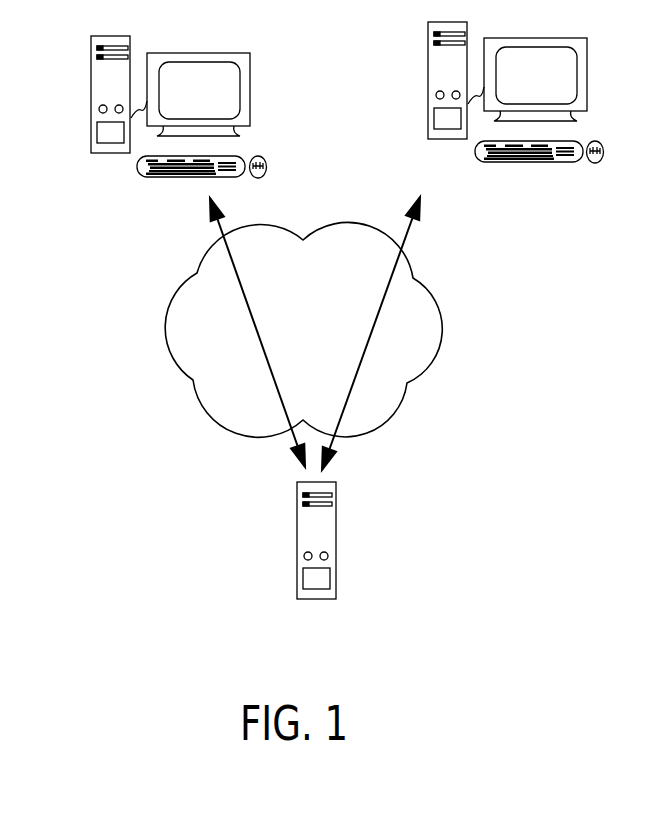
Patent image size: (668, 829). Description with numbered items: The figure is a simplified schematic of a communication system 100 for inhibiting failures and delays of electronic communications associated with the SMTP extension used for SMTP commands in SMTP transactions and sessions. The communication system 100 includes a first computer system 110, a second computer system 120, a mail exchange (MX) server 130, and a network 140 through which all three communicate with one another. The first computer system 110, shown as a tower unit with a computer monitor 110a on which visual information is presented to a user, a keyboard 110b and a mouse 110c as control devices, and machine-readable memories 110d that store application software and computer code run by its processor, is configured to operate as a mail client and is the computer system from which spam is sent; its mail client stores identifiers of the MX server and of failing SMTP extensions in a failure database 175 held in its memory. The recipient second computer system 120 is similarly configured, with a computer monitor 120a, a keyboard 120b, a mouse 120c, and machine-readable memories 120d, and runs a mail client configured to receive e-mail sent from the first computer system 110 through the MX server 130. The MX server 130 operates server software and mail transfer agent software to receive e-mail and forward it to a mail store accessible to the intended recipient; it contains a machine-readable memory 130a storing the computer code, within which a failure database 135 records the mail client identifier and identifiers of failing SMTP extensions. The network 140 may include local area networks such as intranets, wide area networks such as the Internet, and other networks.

The communication system 100 is at (469, 633).
The first computer system 110 is at (103, 155).
The computer monitor 110a is at (165, 52).
The keyboard 110b is at (173, 178).
The mouse 110c is at (268, 160).
The machine-readable memories 110d is at (98, 122).
The failure database 175 is at (97, 132).
The second computer system 120 is at (442, 138).
The computer monitor 120a is at (502, 37).
The keyboard 120b is at (508, 163).
The mouse 120c is at (604, 147).
The machine-readable memories 120d is at (434, 42).
The mail exchange (MX) server 130 is at (320, 600).
The machine-readable memory 130a is at (304, 568).
The failure database 135 is at (303, 580).
The network 140 is at (231, 352).